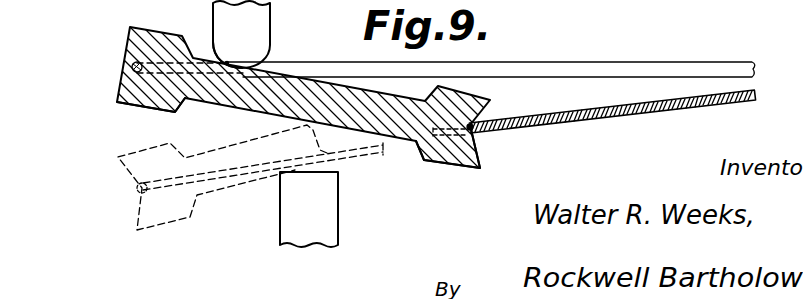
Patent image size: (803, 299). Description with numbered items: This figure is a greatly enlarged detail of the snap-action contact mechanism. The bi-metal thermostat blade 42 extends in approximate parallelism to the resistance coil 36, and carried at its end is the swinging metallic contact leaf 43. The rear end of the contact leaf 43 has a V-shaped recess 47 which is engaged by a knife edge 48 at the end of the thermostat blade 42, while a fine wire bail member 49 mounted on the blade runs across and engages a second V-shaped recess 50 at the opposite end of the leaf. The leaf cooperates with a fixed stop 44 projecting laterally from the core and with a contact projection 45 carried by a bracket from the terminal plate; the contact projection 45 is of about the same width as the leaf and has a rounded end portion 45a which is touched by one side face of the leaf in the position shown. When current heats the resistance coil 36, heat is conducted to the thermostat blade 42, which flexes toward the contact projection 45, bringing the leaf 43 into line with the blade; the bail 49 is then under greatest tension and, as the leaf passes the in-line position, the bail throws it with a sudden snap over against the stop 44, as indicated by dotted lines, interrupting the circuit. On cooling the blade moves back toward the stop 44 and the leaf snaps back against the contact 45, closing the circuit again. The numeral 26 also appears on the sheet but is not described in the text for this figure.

The pivoted feed body 43 is at (313, 100).
The pivot pin 49 is at (134, 64).
The lower left wedge 50 is at (132, 84).
The upper punch 45 is at (257, 25).
The punch tip 45a is at (227, 63).
The lower die 44 is at (318, 218).
The braided strip 42 is at (653, 106).
The strip pivot 48 is at (475, 125).
The lower right wedge 47 is at (478, 148).
The element 36 is at (542, 9).
The element 26 is at (675, 11).